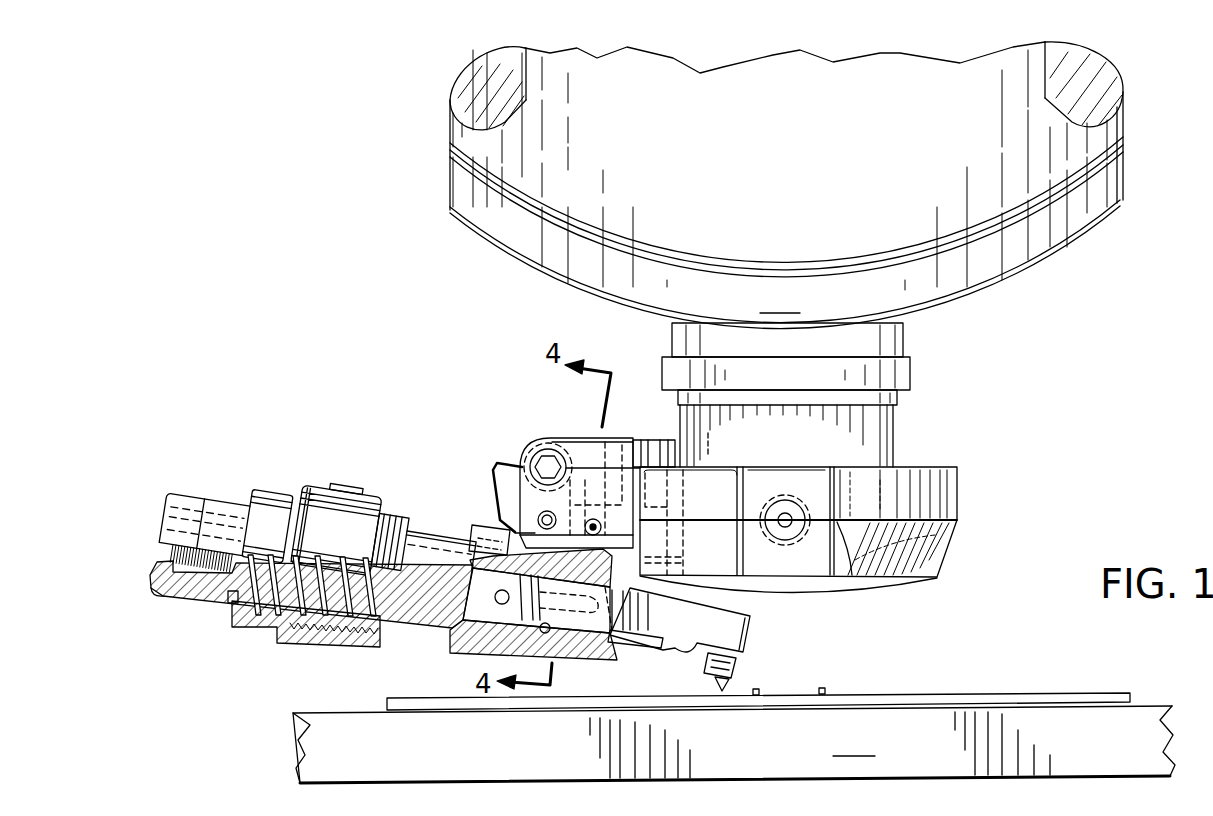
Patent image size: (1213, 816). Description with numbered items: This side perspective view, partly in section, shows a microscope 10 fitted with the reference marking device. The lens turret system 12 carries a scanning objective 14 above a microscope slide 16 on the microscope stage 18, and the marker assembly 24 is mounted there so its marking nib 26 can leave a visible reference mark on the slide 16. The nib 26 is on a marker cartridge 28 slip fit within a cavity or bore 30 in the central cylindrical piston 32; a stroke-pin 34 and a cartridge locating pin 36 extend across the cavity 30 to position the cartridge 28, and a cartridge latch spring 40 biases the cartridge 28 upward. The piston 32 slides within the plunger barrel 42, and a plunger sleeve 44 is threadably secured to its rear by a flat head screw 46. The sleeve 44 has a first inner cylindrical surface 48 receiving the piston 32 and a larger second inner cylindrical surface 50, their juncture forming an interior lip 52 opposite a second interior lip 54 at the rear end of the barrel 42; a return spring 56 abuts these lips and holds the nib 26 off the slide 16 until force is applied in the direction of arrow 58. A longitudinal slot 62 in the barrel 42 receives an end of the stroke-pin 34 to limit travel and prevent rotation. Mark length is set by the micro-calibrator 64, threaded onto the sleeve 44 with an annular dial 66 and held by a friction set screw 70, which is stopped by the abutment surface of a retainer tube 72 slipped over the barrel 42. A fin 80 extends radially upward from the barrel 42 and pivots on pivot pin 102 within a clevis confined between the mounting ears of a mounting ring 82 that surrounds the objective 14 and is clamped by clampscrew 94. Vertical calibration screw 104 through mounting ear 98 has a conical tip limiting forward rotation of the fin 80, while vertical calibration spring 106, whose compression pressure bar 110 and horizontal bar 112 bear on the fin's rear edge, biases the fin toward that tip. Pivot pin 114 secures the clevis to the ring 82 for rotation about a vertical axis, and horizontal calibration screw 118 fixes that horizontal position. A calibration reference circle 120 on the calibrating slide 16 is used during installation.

The microscope 10 is at (379, 262).
The lens turret system 12 is at (786, 185).
The scanning objective 14 is at (912, 420).
The microscope slide 16 is at (980, 694).
The microscope stage 18 is at (734, 744).
The marker assembly 24 is at (295, 455).
The marking nib 26 is at (740, 688).
The marker cartridge 28 is at (753, 630).
The cavity or bore 30 is at (407, 497).
The central cylindrical piston 32 is at (390, 652).
The stroke-pin 34 is at (501, 603).
The cartridge locating pin 36 is at (458, 660).
The cartridge latch spring 40 is at (663, 650).
The plunger barrel 42 is at (392, 643).
The plunger sleeve 44 is at (183, 608).
The flat head screw 46 is at (160, 556).
The first inner cylindrical surface 48 is at (157, 598).
The second inner cylindrical surface 50 is at (252, 628).
The interior lip 52 is at (223, 608).
The interior lip 54 is at (308, 655).
The return spring 56 is at (262, 647).
The arrow 58 is at (218, 463).
The longitudinal slot 62 is at (602, 666).
The micro-calibrator 64 is at (333, 467).
The annular dial 66 is at (287, 493).
The friction set screw 70 is at (350, 494).
The retainer tube 72 is at (575, 663).
The fin 80 is at (477, 530).
The mounting ring 82 is at (963, 509).
The clampscrew 94 is at (796, 512).
The mounting ear 98 is at (592, 447).
The pivot pin 102 is at (528, 432).
The vertical calibration screw 104 is at (602, 527).
The vertical calibration spring 106 is at (500, 459).
The compression pressure bar 110 is at (498, 472).
The horizontal bar 112 is at (507, 525).
The pivot pin 114 is at (620, 430).
The horizontal calibration screw 118 is at (549, 455).
The calibration reference circle 120 is at (822, 690).